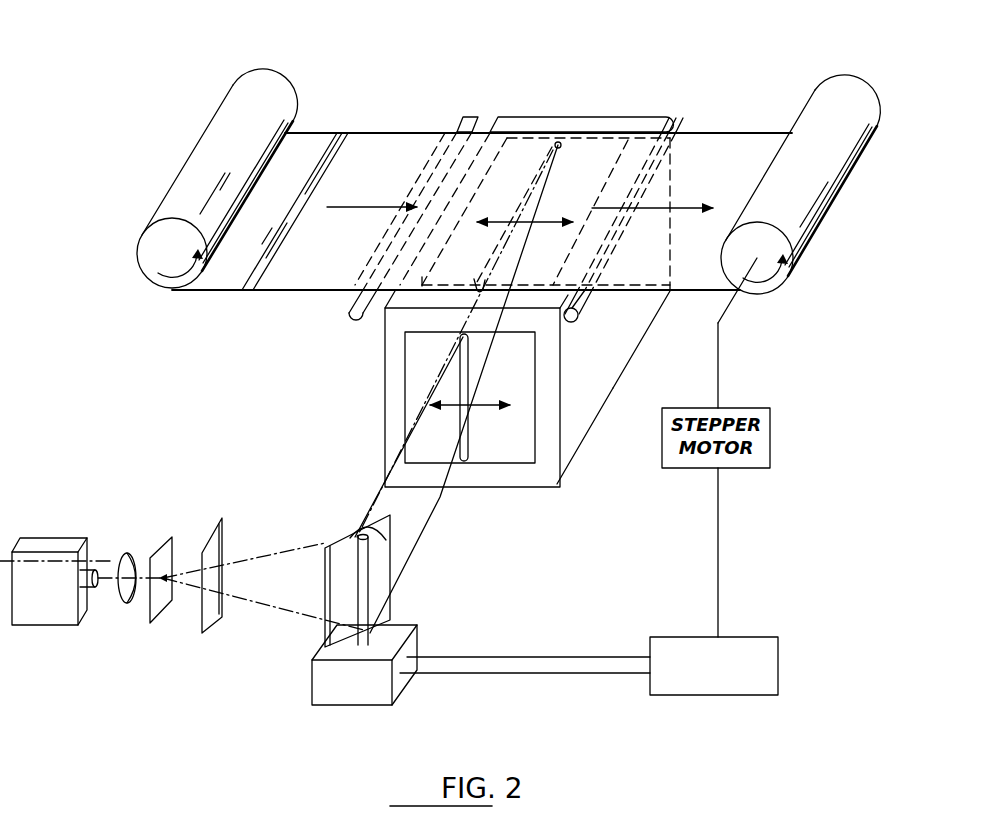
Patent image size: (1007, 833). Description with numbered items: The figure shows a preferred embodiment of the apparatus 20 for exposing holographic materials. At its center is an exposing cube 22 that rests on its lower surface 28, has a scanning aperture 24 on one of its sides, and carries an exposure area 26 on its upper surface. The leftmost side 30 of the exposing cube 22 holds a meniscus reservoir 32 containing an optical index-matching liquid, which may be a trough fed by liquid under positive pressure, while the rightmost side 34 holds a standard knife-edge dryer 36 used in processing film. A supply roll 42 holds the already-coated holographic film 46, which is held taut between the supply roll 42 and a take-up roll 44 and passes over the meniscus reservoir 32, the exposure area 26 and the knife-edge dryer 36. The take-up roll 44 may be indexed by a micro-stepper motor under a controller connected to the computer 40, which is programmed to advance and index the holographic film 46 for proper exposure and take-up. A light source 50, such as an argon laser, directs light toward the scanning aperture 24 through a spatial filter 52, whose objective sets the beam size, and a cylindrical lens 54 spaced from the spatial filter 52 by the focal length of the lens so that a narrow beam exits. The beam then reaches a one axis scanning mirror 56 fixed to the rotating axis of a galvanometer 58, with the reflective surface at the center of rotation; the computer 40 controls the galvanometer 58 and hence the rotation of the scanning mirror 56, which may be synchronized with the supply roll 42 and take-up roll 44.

The apparatus 20 is at (666, 58).
The exposing cube 22 is at (667, 112).
The scanning aperture 24 is at (530, 464).
The exposure area 26 is at (550, 114).
The lower surface 28 is at (598, 422).
The leftmost side 30 is at (385, 375).
The meniscus reservoir 32 is at (456, 130).
The rightmost side 34 is at (628, 347).
The knife-edge dryer 36 is at (686, 126).
The computer 40 is at (750, 637).
The supply roll 42 is at (147, 250).
The take-up roll 44 is at (831, 73).
The holographic film 46 is at (357, 132).
The light source 50 is at (67, 538).
The spatial filter 52 is at (170, 538).
The cylindrical lens 54 is at (222, 518).
The one axis scanning mirror 56 is at (325, 640).
The galvanometer 58 is at (362, 697).